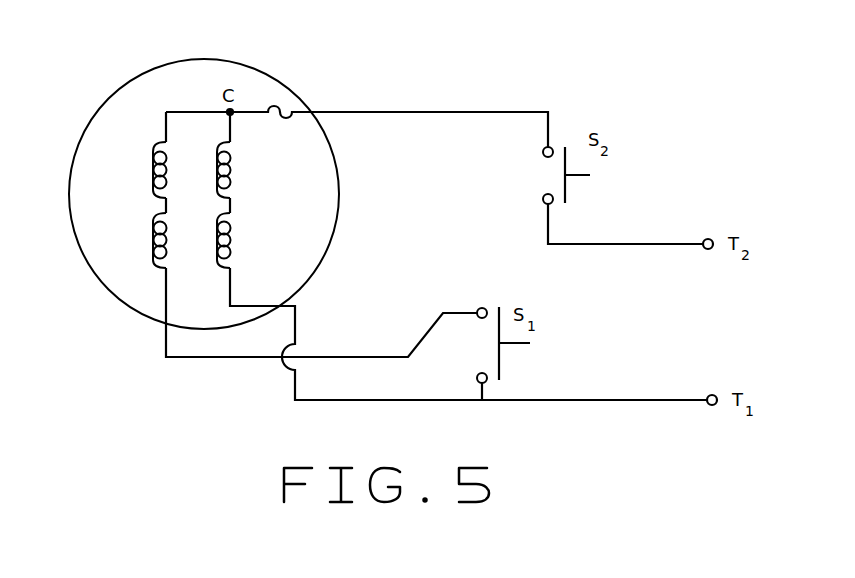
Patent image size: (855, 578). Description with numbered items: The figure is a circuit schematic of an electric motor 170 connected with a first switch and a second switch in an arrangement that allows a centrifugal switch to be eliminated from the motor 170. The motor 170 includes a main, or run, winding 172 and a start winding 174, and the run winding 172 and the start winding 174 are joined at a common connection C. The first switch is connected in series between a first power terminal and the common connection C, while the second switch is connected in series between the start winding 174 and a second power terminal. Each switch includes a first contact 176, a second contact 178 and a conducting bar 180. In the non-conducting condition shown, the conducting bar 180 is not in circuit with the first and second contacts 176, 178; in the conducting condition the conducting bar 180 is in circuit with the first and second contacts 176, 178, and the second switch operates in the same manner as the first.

The electric motor 170 is at (260, 68).
The run winding 172 is at (258, 186).
The start winding 174 is at (110, 209).
The first contact 176 is at (541, 152).
The second contact 178 is at (542, 200).
The conducting bar 180 is at (569, 188).